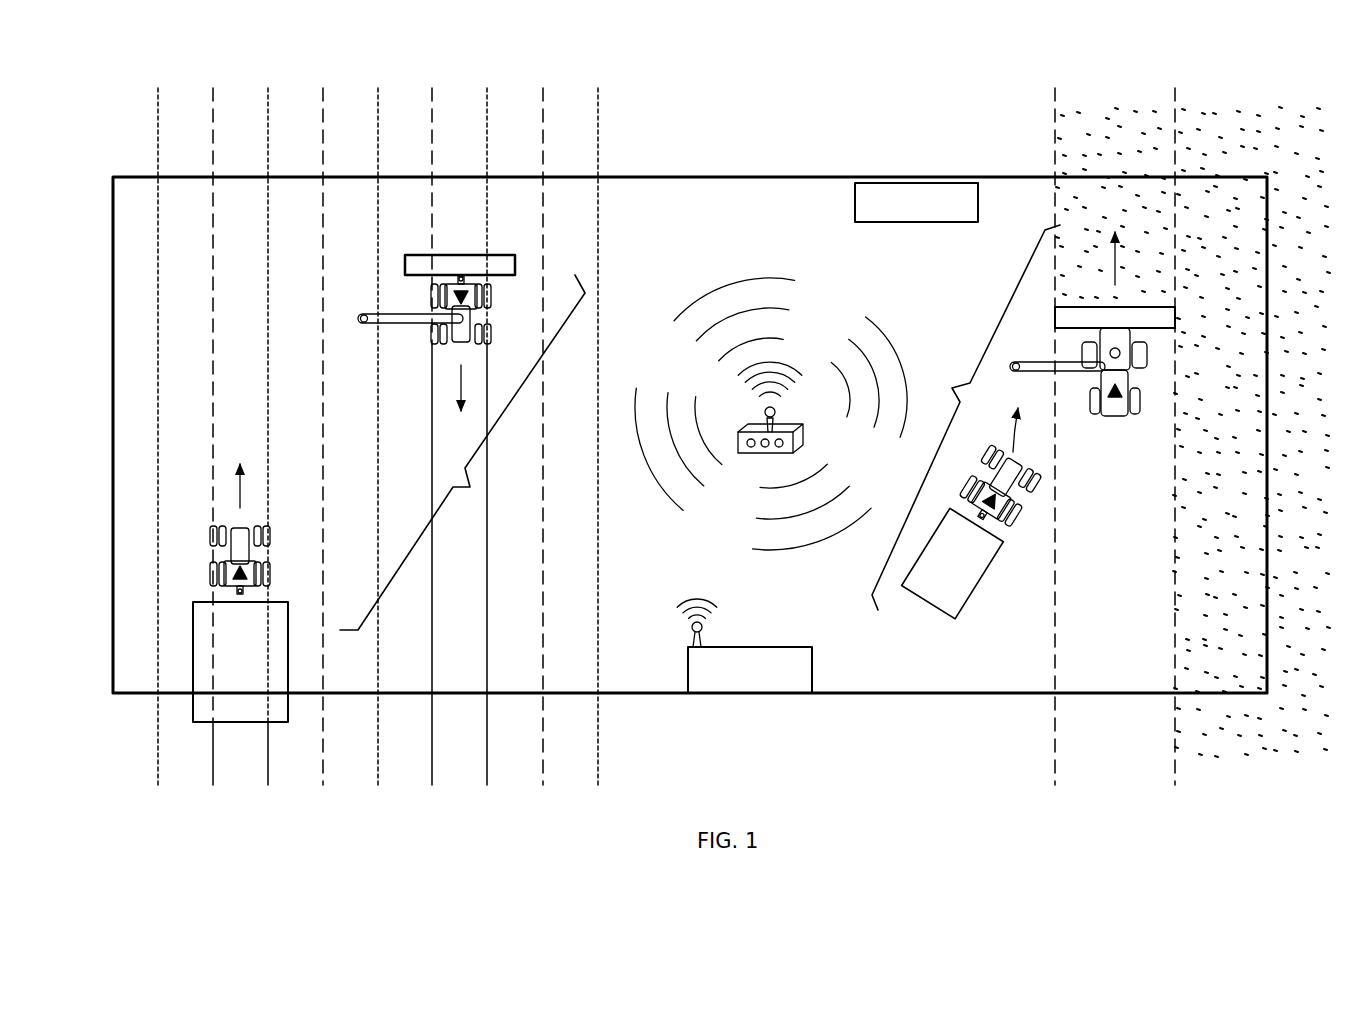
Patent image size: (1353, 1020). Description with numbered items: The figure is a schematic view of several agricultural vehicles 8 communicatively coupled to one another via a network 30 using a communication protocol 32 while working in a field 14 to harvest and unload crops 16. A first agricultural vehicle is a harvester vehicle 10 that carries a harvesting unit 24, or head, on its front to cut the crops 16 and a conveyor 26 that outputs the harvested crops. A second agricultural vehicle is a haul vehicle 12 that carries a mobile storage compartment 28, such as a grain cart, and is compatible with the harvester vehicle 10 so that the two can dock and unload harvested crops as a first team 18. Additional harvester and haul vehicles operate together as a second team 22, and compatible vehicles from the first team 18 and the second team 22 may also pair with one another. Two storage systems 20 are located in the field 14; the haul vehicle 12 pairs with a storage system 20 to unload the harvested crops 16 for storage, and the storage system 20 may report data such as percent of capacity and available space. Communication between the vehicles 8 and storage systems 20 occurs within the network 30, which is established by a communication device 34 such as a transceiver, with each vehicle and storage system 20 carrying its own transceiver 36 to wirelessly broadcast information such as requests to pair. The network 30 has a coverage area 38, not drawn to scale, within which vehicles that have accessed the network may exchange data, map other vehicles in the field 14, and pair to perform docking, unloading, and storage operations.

The agricultural vehicles 8 is at (204, 548).
The harvester vehicle 10 is at (486, 302).
The haul vehicle 12 is at (265, 573).
The field 14 is at (114, 140).
The crops 16 is at (1155, 148).
The first team 18 is at (462, 490).
The storage system 20 is at (855, 205).
The second team 22 is at (963, 384).
The harvesting unit 24 is at (458, 255).
The conveyor 26 is at (410, 320).
The mobile storage compartment 28 is at (247, 723).
The network 30 is at (146, 742).
The communication protocol 32 is at (727, 283).
The communication device 34 is at (766, 455).
The transceiver 36 is at (692, 630).
The coverage area 38 is at (128, 697).